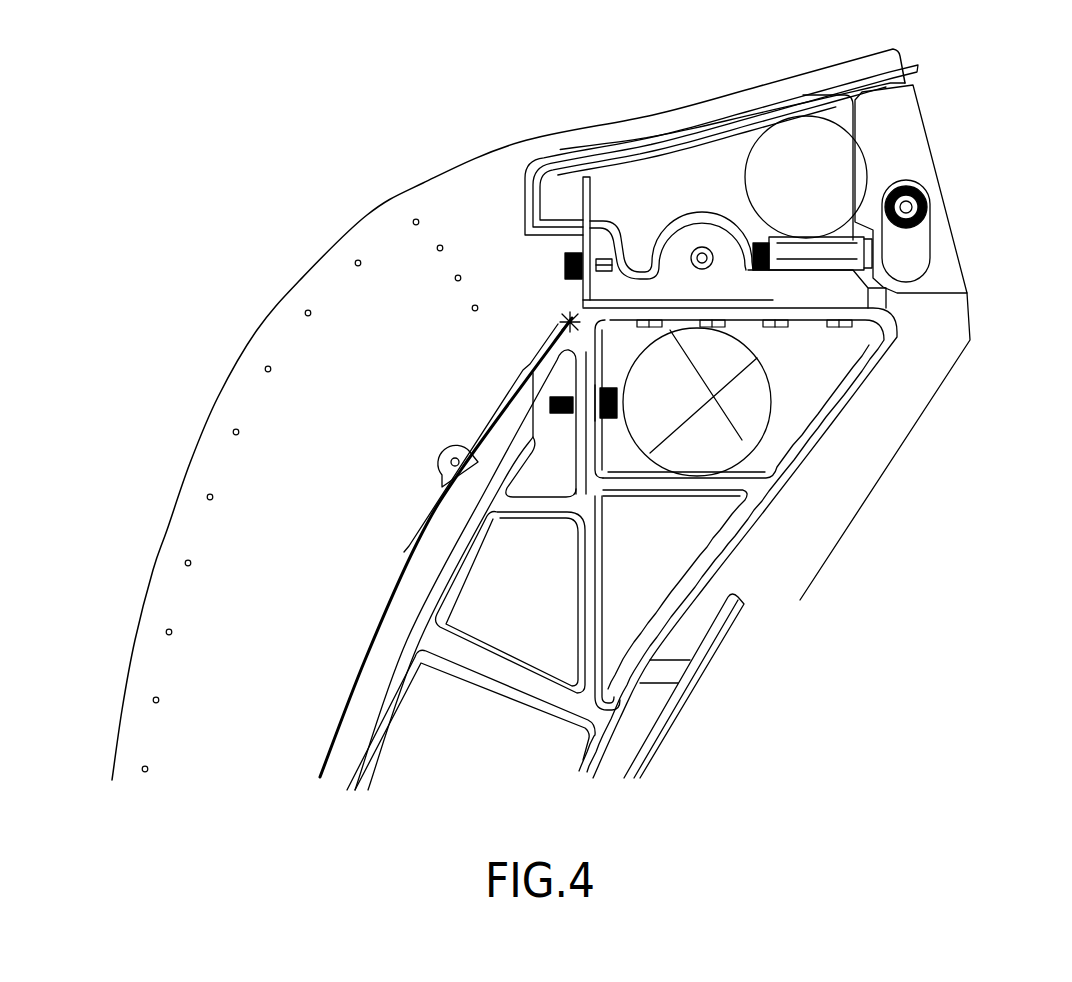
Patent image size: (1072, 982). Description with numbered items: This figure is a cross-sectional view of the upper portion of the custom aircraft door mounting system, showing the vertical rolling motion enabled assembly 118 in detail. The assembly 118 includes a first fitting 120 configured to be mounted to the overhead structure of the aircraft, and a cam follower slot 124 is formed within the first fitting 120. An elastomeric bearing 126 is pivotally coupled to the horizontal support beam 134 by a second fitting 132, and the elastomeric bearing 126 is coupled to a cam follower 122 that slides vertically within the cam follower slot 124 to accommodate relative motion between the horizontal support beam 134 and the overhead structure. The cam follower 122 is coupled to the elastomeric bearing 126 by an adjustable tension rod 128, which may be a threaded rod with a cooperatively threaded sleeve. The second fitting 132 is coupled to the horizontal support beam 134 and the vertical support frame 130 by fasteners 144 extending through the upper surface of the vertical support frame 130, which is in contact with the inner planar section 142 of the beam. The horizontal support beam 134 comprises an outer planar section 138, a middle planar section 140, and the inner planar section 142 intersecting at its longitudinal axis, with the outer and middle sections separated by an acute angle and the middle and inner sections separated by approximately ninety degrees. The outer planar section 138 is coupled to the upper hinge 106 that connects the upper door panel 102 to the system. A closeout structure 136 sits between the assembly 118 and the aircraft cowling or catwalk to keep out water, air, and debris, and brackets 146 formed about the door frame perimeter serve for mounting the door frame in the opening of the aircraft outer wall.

The upper door panel 102 is at (408, 612).
The upper hinge 106 is at (443, 477).
The vertical rolling motion enabled assembly 118 is at (925, 104).
The first fitting 120 is at (937, 170).
The cam follower 122 is at (923, 227).
The cam follower slot 124 is at (932, 258).
The elastomeric bearing 126 is at (677, 210).
The adjustable tension rod 128 is at (812, 235).
The vertical support frame 130 is at (683, 600).
The second fitting 132 is at (727, 258).
The horizontal support beam 134 is at (568, 323).
The closeout structure 136 is at (533, 197).
The outer planar section 138 is at (512, 408).
The middle planar section 140 is at (603, 393).
The inner planar section 142 is at (733, 308).
The fasteners 144 is at (648, 327).
The brackets 146 is at (580, 443).